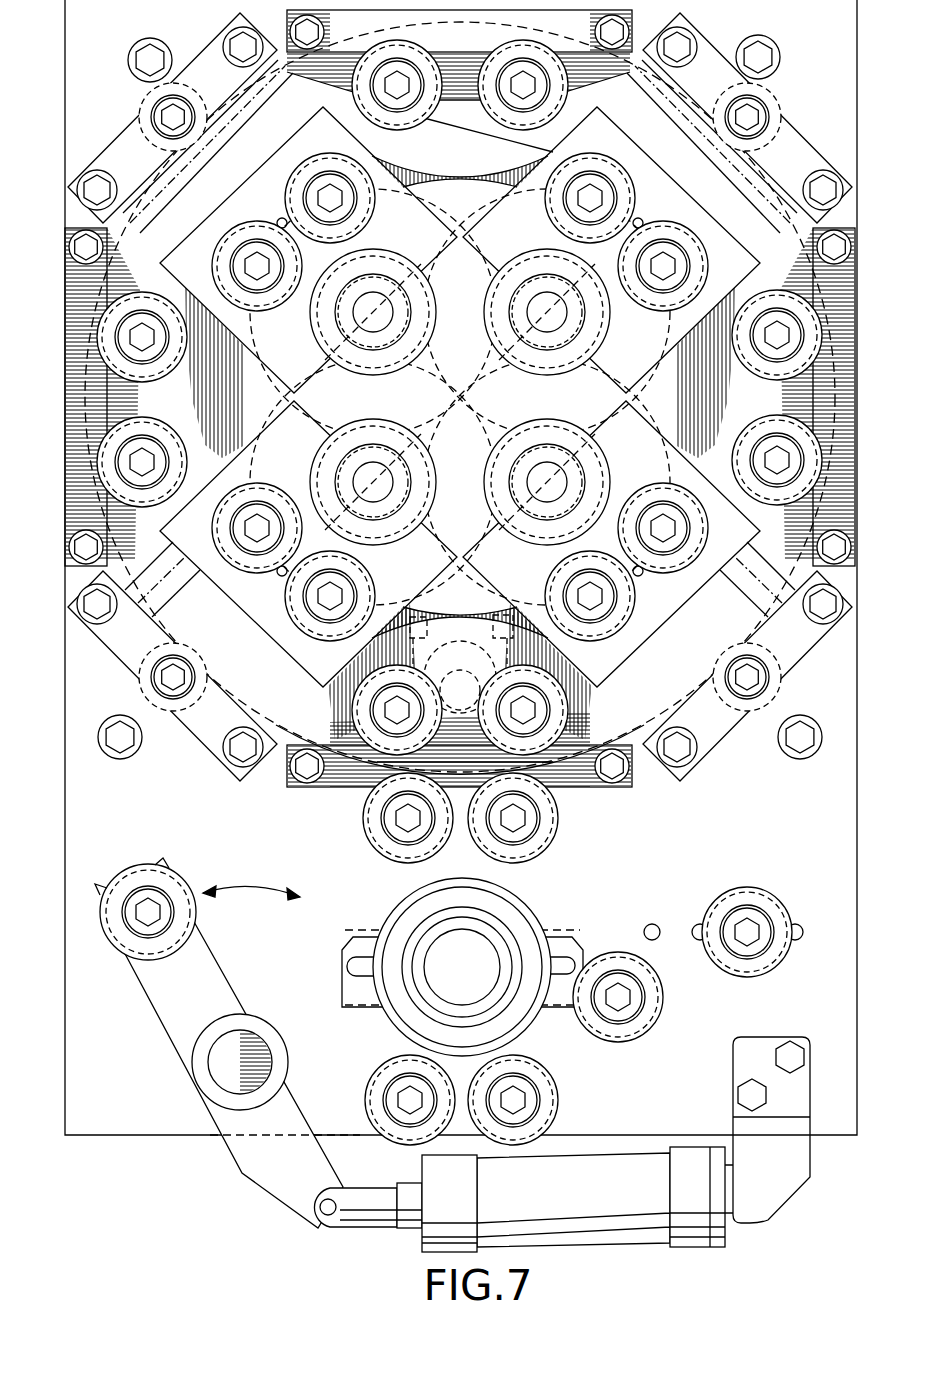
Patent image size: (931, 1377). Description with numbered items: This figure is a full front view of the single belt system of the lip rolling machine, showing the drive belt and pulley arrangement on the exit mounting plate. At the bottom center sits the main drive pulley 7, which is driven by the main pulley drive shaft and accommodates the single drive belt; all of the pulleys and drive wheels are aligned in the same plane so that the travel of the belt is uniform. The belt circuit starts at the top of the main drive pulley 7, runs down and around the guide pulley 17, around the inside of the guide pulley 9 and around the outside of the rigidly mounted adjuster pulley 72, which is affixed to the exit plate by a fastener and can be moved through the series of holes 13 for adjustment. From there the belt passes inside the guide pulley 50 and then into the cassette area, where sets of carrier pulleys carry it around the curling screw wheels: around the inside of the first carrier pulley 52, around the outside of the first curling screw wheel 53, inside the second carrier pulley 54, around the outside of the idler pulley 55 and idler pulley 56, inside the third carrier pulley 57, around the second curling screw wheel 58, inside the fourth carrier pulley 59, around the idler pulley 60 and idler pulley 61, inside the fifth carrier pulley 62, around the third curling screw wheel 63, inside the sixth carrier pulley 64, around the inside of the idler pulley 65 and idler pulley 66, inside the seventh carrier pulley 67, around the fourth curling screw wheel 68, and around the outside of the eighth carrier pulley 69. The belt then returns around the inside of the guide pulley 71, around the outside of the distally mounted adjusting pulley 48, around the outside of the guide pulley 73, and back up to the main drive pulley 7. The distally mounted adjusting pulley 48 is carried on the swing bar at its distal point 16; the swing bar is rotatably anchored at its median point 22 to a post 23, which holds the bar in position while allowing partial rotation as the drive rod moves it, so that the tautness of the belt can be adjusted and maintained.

The main drive pulley 7 is at (465, 963).
The guide pulley 9 is at (640, 1027).
The holes 13 is at (655, 925).
The distal point 16 is at (157, 918).
The guide pulley 17 is at (550, 1105).
The median point 22 is at (233, 1080).
The post 23 is at (237, 1057).
The distally mounted adjusting pulley 48 is at (132, 943).
The guide pulley 50 is at (550, 818).
The first carrier pulley 52 is at (622, 628).
The first curling screw wheel 53 is at (543, 530).
The second carrier pulley 54 is at (643, 493).
The idler pulley 55 is at (743, 447).
The idler pulley 56 is at (747, 343).
The third carrier pulley 57 is at (680, 233).
The second curling screw wheel 58 is at (553, 353).
The fourth carrier pulley 59 is at (617, 167).
The idler pulley 60 is at (490, 62).
The idler pulley 61 is at (423, 115).
The fifth carrier pulley 62 is at (292, 187).
The third curling screw wheel 63 is at (407, 350).
The sixth carrier pulley 64 is at (227, 240).
The idler pulley 65 is at (103, 340).
The idler pulley 66 is at (118, 433).
The seventh carrier pulley 67 is at (273, 493).
The fourth curling screw wheel 68 is at (410, 510).
The eighth carrier pulley 69 is at (360, 577).
The guide pulley 71 is at (370, 818).
The rigidly mounted adjuster pulley 72 is at (780, 915).
The guide pulley 73 is at (373, 1083).